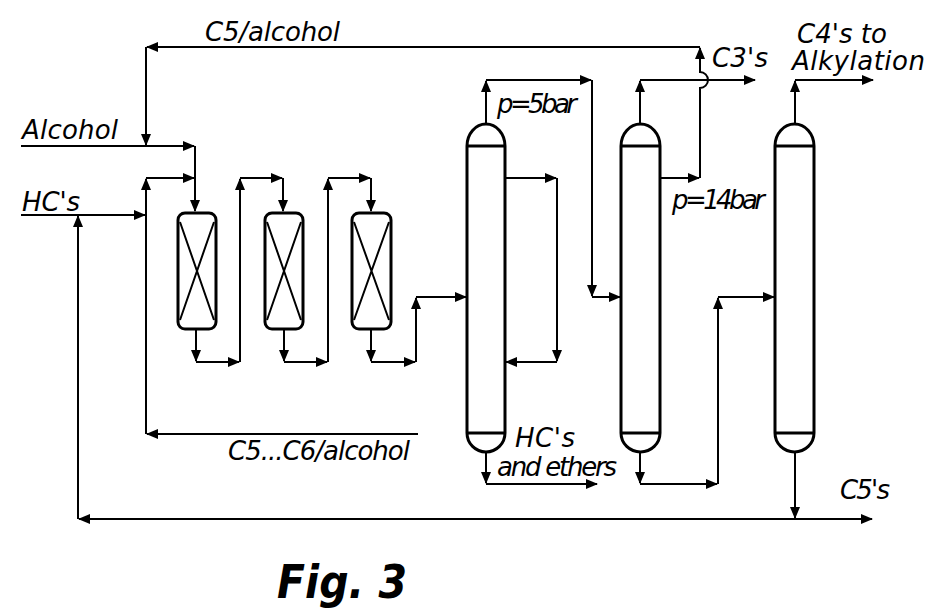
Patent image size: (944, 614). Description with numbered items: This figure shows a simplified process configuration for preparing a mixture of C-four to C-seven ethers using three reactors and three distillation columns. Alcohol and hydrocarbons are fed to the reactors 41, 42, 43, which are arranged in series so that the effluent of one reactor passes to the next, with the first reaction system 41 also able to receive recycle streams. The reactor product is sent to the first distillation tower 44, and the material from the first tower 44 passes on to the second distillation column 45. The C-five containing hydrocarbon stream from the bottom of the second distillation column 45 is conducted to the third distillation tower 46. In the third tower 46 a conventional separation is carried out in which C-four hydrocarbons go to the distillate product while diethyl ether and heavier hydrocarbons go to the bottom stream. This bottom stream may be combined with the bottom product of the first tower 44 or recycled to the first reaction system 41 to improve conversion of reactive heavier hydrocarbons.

The reactor 41 is at (186, 331).
The reactor 42 is at (273, 331).
The reactor 43 is at (360, 331).
The first distillation tower 44 is at (467, 179).
The second distillation column 45 is at (621, 392).
The third distillation tower 46 is at (815, 392).